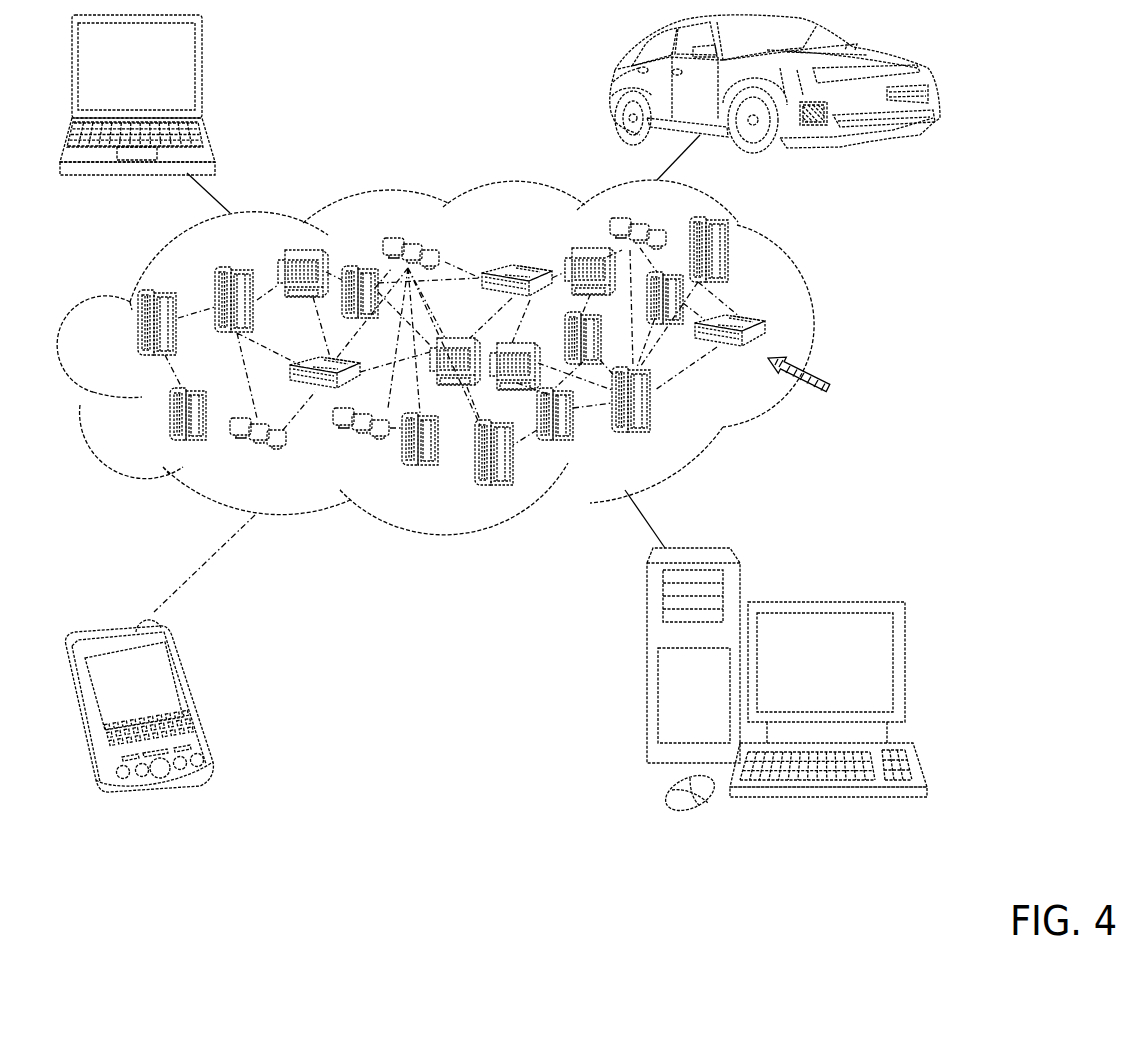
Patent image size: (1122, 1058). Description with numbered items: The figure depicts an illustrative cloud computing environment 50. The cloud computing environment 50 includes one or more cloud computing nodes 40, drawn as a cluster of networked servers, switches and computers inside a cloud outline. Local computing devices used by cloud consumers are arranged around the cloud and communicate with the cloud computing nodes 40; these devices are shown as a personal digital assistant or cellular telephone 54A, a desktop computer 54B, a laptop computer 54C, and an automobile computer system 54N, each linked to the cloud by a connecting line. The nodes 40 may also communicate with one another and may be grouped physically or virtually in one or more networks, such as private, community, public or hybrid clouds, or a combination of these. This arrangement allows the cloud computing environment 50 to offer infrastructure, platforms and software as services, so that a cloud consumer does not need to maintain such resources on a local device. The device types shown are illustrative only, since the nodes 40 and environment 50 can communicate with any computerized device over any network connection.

The cloud computing node 40 is at (817, 381).
The cloud computing environment 50 is at (823, 330).
The personal digital assistant (PDA) or cellular telephone 54A is at (195, 693).
The desktop computer 54B is at (823, 602).
The laptop computer 54C is at (202, 72).
The automobile computer system 54N is at (617, 87).